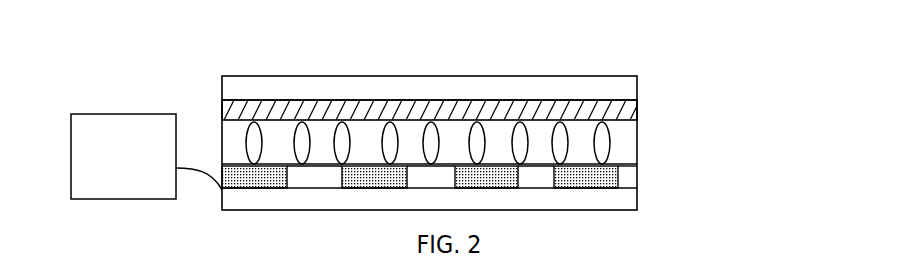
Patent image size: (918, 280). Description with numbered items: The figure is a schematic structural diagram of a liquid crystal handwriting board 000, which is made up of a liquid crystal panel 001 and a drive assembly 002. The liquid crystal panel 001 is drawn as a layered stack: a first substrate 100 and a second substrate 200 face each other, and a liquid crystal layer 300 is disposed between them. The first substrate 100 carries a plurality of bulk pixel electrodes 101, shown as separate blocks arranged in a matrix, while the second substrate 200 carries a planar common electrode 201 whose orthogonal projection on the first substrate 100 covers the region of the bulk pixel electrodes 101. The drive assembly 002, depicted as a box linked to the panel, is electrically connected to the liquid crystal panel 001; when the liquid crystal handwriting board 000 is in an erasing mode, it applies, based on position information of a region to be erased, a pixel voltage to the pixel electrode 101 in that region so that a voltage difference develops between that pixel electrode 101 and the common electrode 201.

The liquid crystal handwriting board 000 is at (75, 36).
The liquid crystal panel 001 is at (526, 145).
The drive assembly 002 is at (146, 156).
The first substrate 100 is at (495, 178).
The bulk pixel electrodes 101 is at (595, 176).
The second substrate 200 is at (495, 113).
The common electrode 201 is at (622, 113).
The liquid crystal layer 300 is at (620, 146).